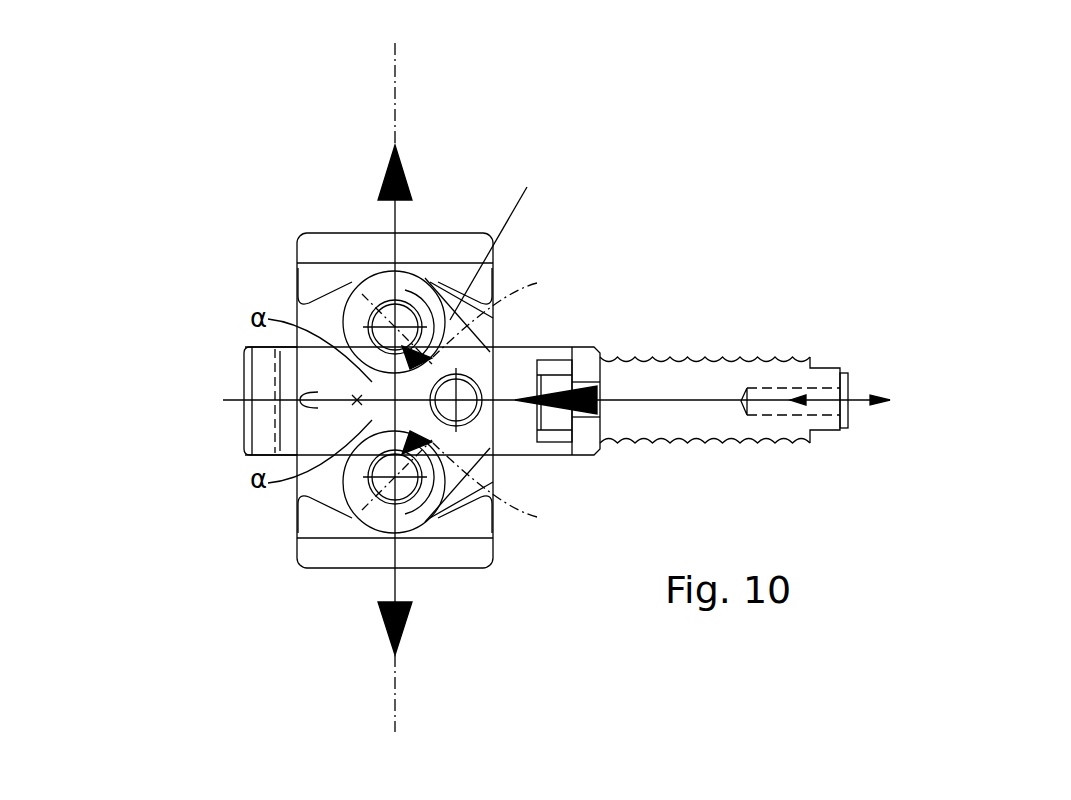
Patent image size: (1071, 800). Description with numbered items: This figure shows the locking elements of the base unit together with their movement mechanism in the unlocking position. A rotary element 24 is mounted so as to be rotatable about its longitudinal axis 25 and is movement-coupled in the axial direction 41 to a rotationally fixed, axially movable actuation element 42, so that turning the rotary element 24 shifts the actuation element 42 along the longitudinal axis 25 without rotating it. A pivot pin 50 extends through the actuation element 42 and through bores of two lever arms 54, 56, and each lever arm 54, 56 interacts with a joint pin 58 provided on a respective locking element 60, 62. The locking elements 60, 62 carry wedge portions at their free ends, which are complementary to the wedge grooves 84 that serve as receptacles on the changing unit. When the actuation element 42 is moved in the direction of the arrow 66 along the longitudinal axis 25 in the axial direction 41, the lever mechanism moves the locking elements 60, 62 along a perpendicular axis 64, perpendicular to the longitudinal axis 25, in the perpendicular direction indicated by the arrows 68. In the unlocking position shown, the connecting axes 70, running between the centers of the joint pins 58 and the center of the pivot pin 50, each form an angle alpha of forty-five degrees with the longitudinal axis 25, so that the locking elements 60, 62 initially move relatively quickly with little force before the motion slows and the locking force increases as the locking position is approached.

The rotary element 24 is at (728, 360).
The longitudinal axis 25 is at (232, 398).
The axial direction 41 is at (825, 400).
The actuation element 42 is at (562, 353).
The pivot pin 50 is at (500, 350).
The lever arm 54 is at (467, 278).
The lever arm 56 is at (450, 475).
The joint pin 58 is at (412, 307).
The locking element 60 is at (487, 239).
The locking element 62 is at (478, 525).
The perpendicular axis 64 is at (395, 70).
The arrow 66 is at (657, 395).
The arrows 68 is at (398, 215).
The connecting axes 70 is at (538, 483).
The wedge grooves 84 is at (327, 233).